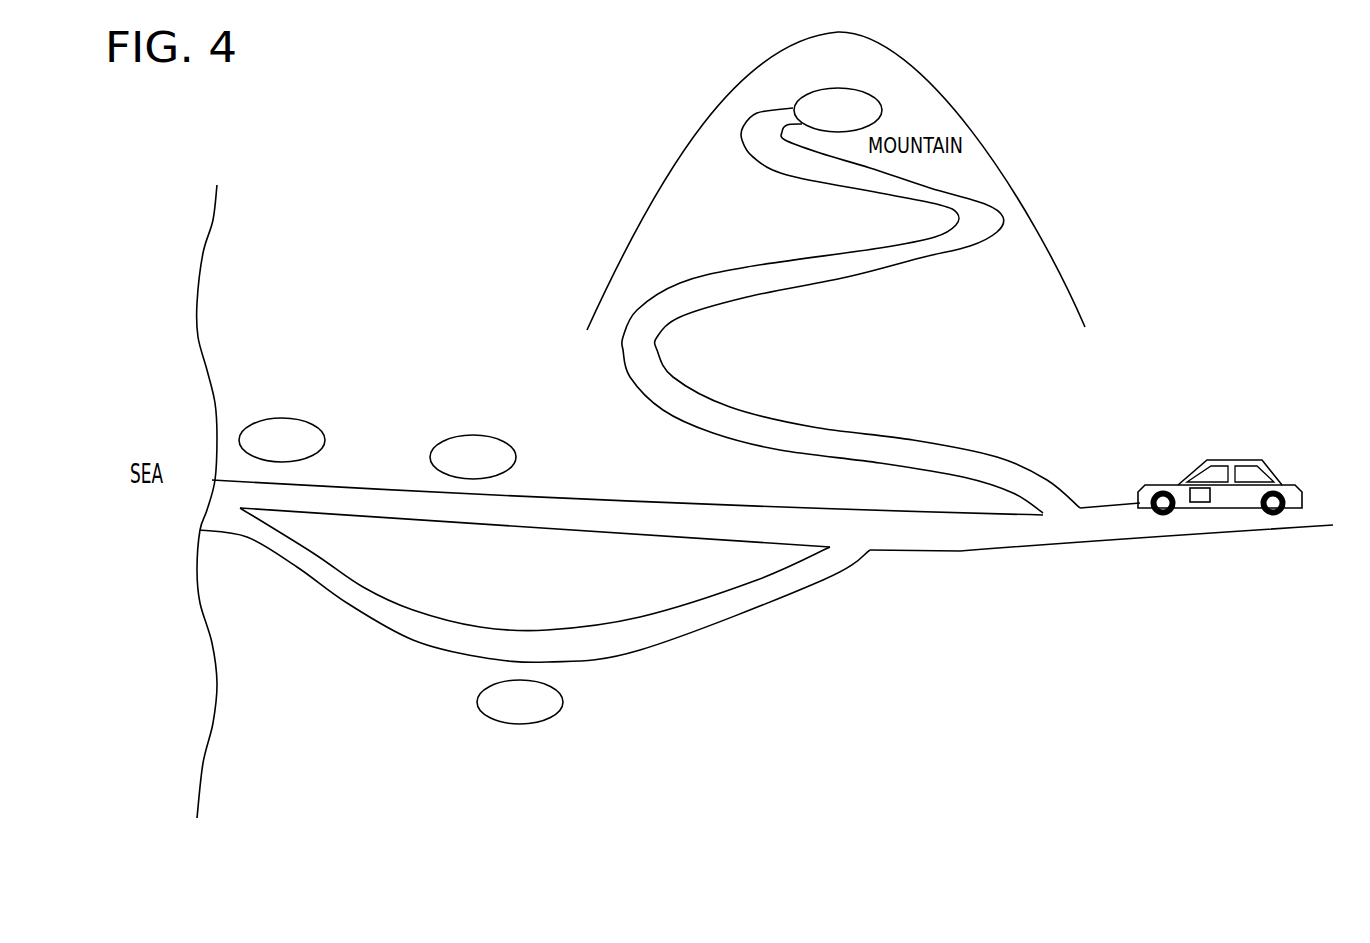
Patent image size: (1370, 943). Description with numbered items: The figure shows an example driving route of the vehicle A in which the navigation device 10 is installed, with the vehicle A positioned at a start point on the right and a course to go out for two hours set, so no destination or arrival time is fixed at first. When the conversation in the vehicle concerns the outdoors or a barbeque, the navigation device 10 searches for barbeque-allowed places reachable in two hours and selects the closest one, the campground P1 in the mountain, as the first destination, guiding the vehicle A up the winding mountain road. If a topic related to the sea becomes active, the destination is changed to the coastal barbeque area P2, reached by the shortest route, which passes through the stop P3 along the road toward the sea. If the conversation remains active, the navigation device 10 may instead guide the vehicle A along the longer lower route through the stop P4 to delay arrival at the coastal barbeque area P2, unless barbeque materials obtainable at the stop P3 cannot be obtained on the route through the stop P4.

The campground in a mountain P1 is at (832, 88).
The coastal barbeque area P2 is at (280, 418).
The stop P3 is at (472, 435).
The stop P4 is at (517, 724).
The vehicle A is at (1232, 460).
The navigation device 10 is at (1198, 503).